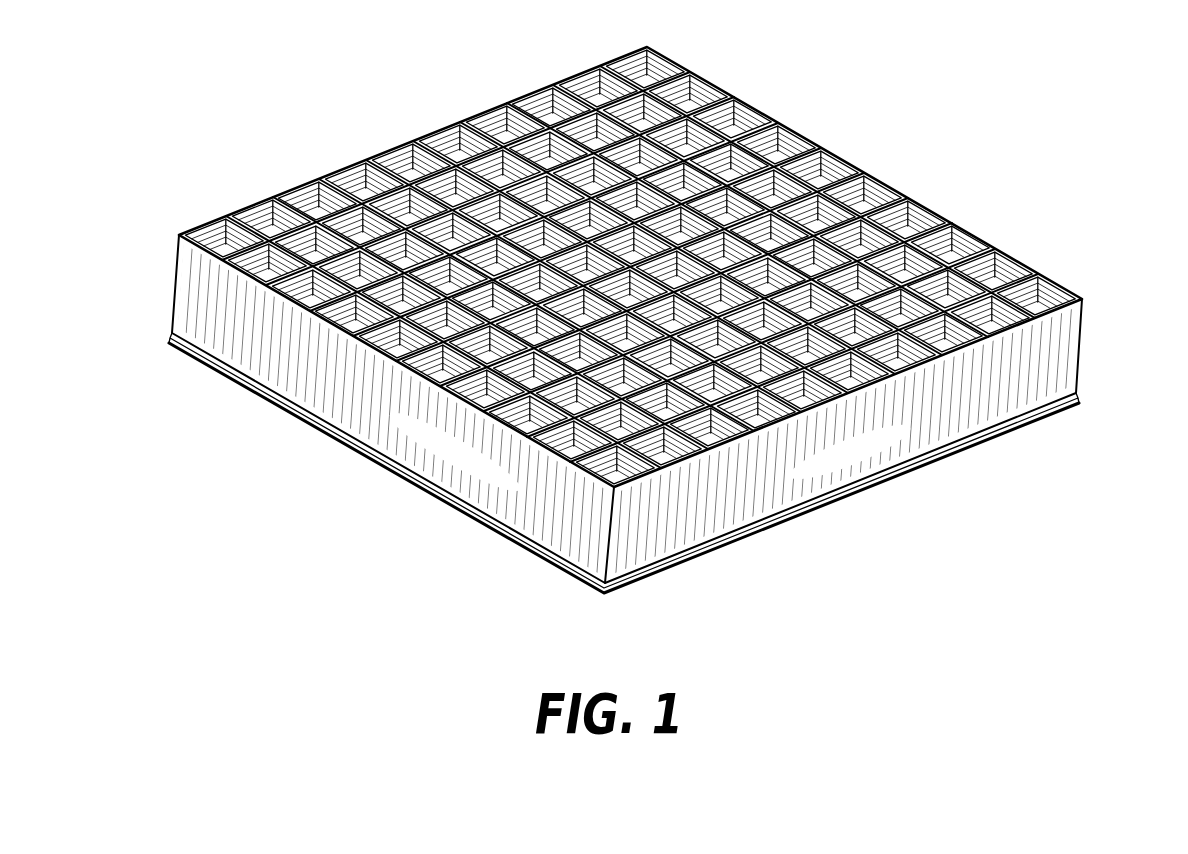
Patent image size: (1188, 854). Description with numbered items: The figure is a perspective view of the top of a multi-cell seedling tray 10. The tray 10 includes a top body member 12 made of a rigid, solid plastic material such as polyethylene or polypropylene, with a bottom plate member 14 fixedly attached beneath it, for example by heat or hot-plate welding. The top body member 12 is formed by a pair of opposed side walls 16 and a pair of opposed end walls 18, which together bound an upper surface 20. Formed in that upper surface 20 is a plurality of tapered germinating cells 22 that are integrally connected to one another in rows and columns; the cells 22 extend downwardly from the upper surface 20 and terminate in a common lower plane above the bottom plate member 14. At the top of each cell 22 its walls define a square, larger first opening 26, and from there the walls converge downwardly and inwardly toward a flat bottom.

The seedling tray 10 is at (672, 318).
The top body member 12 is at (1080, 336).
The bottom plate member 14 is at (950, 450).
The side walls 16 is at (1050, 372).
The end walls 18 is at (438, 462).
The upper surface 20 is at (630, 265).
The tapered germinating cells 22 is at (970, 248).
The first opening 26 is at (512, 107).